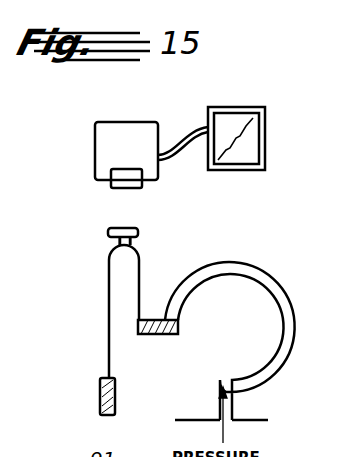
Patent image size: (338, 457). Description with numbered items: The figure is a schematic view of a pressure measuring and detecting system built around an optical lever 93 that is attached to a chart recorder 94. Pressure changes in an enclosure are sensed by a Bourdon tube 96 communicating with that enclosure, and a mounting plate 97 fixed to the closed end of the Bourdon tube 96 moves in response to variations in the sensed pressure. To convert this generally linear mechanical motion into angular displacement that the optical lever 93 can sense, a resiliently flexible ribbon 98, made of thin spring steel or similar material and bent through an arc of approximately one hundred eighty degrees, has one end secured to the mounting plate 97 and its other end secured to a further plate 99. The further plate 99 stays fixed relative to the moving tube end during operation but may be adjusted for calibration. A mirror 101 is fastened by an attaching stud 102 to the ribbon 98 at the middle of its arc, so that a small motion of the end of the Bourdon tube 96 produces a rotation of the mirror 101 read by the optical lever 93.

The optical lever 93 is at (131, 122).
The chart recorder 94 is at (246, 107).
The Bourdon tube 96 is at (284, 283).
The mounting plate 97 is at (151, 335).
The resiliently flexible ribbon 98 is at (140, 262).
The further plate 99 is at (117, 397).
The mirror 101 is at (136, 211).
The attaching stud 102 is at (117, 239).